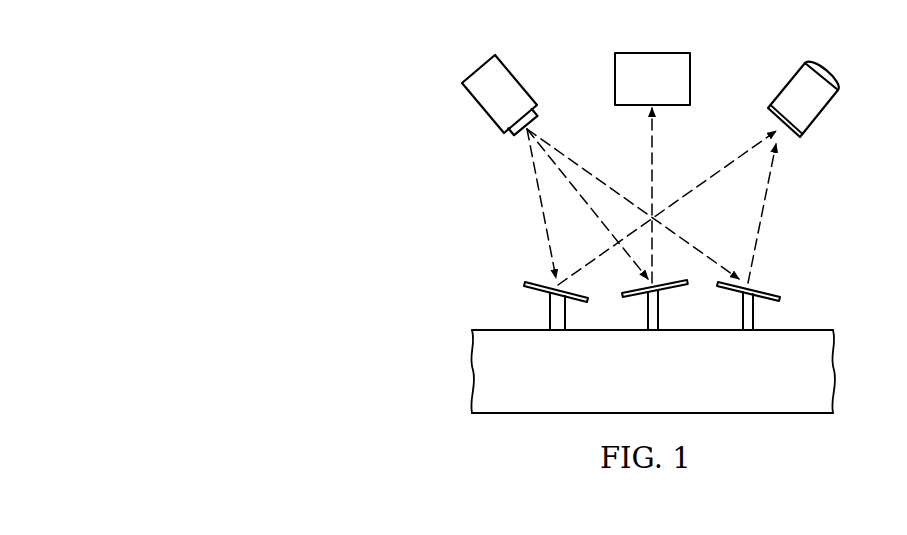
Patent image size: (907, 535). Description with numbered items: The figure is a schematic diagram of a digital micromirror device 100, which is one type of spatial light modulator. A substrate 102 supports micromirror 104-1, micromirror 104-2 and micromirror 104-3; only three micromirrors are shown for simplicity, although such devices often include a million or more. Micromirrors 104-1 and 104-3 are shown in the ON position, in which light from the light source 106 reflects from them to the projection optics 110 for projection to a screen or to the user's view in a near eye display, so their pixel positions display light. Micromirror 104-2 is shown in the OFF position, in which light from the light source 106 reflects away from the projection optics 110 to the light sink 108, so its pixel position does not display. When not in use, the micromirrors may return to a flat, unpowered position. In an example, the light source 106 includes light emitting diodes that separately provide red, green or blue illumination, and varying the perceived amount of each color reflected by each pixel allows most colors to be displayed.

The digital micromirror device 100 is at (364, 179).
The substrate 102 is at (472, 373).
The micromirror 104-1 is at (757, 315).
The micromirror 104-2 is at (658, 310).
The micromirror 104-3 is at (550, 310).
The light source 106 is at (484, 110).
The light sink 108 is at (671, 92).
The projection optics 110 is at (818, 116).